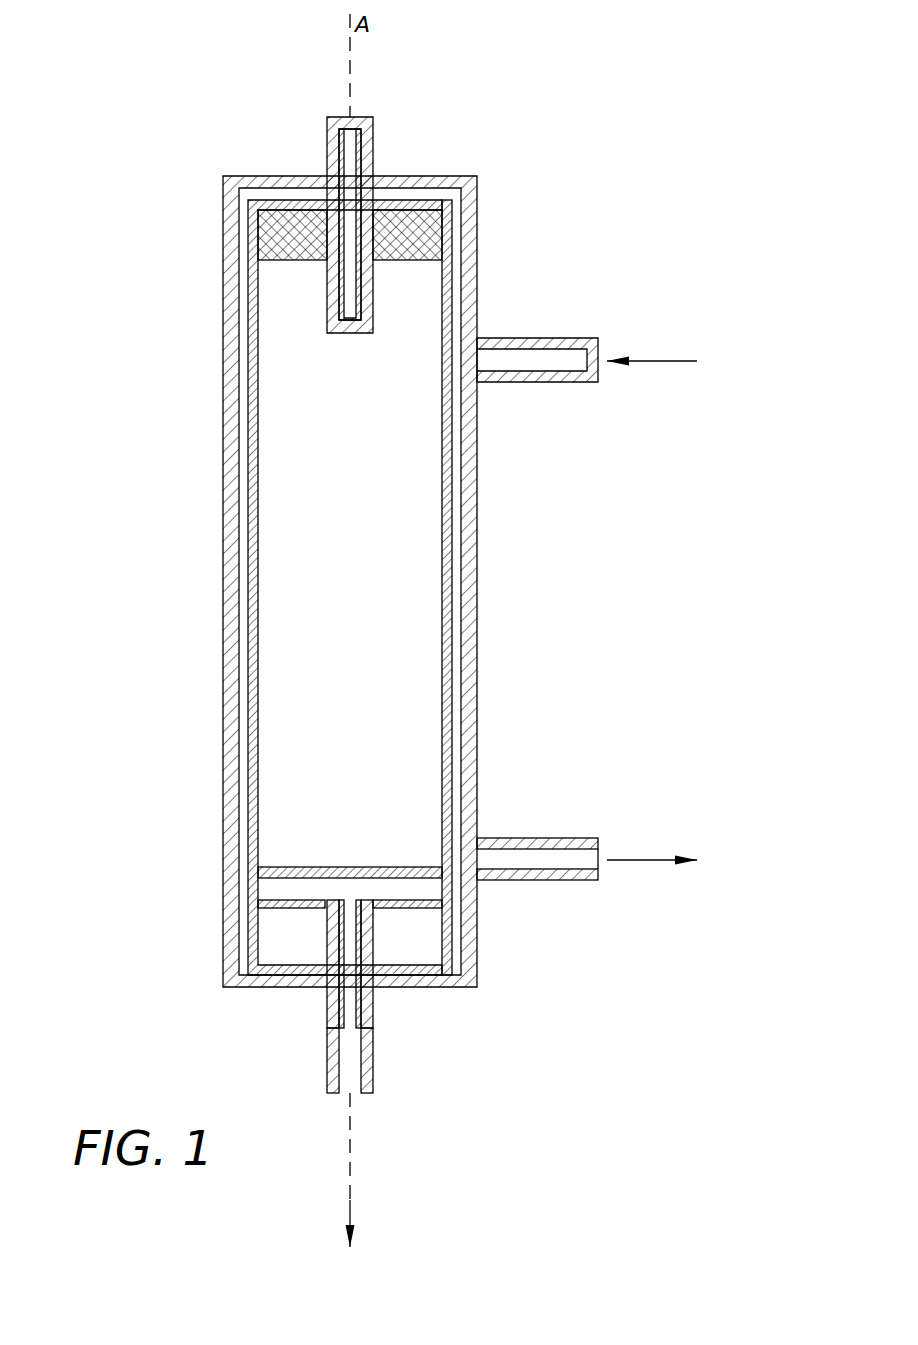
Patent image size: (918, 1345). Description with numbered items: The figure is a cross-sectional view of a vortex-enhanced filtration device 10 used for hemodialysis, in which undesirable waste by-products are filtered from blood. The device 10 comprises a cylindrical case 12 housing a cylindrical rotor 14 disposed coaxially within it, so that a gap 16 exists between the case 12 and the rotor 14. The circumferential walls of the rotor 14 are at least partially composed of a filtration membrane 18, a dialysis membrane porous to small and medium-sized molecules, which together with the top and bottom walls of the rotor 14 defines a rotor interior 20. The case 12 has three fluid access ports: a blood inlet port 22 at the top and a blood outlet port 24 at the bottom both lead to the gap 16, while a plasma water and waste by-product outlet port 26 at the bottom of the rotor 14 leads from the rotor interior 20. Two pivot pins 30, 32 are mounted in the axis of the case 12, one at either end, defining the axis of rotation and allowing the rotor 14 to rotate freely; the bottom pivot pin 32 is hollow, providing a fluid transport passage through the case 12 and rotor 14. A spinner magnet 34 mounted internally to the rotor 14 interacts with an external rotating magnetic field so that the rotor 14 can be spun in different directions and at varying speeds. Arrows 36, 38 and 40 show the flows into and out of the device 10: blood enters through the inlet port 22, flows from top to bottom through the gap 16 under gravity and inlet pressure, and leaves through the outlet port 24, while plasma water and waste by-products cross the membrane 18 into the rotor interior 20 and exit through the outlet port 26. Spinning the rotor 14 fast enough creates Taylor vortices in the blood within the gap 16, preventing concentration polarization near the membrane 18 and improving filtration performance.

The filtration device 10 is at (572, 78).
The cylindrical case 12 is at (222, 402).
The cylindrical rotor 14 is at (250, 710).
The gap 16 is at (457, 642).
The filtration membrane 18 is at (452, 492).
The rotor interior 20 is at (310, 543).
The blood inlet port 22 is at (537, 338).
The blood outlet port 24 is at (524, 838).
The plasma water and waste by-product outlet port 26 is at (328, 1050).
The top pivot pin 30 is at (365, 150).
The bottom pivot pin 32 is at (367, 1012).
The spinner magnet 34 is at (283, 238).
The arrow 36 is at (658, 360).
The arrow 38 is at (634, 860).
The arrow 40 is at (350, 1200).